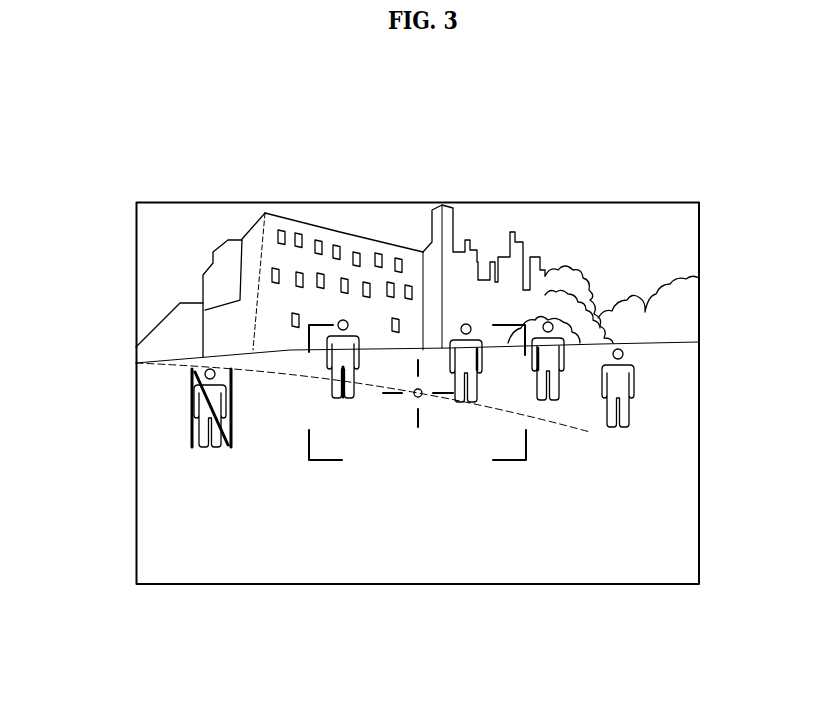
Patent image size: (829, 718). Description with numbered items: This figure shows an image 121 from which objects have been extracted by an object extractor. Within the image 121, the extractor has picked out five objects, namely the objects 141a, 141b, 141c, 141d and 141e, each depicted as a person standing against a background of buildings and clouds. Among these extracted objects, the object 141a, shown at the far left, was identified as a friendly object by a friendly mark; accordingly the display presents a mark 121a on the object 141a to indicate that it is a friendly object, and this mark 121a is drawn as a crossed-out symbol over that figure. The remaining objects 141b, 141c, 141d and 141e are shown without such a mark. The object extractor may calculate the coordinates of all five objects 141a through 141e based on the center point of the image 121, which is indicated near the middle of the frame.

The image 121 is at (652, 203).
The mark for indicating a friendly object 121a is at (189, 424).
The object 141a is at (210, 395).
The object 141b is at (343, 345).
The object 141c is at (465, 353).
The object 141d is at (548, 343).
The object 141e is at (617, 375).